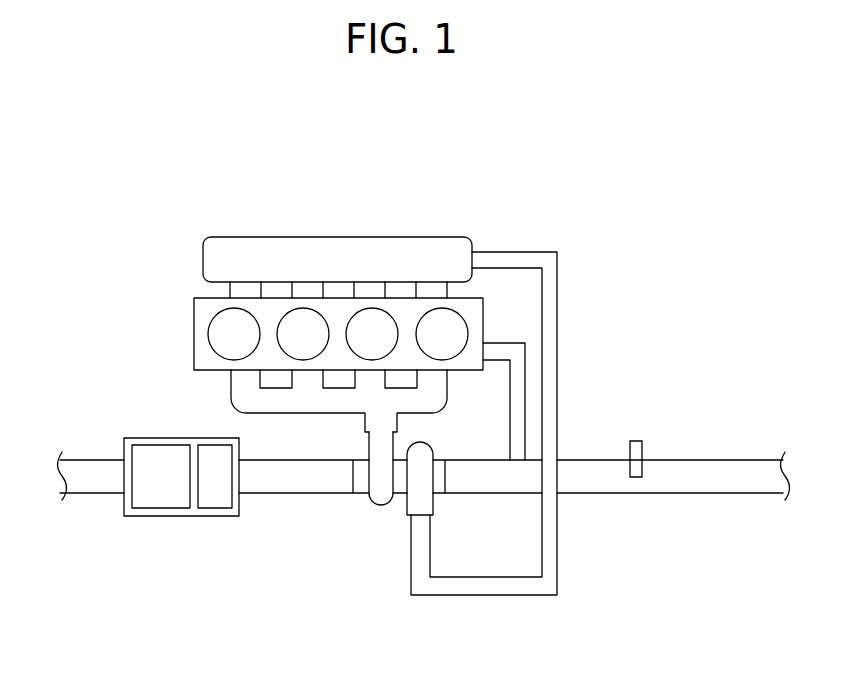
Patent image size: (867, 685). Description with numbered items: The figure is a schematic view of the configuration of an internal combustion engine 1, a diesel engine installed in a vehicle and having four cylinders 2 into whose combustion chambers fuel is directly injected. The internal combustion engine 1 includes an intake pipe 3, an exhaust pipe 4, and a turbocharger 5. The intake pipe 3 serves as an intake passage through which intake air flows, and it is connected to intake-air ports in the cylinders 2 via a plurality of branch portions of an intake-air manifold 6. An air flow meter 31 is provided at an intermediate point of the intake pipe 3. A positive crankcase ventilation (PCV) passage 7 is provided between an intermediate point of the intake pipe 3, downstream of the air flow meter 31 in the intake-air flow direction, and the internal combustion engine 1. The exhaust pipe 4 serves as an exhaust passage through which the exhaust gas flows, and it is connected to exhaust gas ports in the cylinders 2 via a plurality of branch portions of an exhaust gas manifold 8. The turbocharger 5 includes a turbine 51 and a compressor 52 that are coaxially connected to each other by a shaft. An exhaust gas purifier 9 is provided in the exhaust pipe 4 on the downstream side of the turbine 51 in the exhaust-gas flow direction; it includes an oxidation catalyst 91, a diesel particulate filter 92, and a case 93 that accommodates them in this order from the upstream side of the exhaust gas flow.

The internal combustion engine 1 is at (194, 301).
The cylinders 2 is at (221, 356).
The intake pipe 3 is at (557, 319).
The air flow meter 31 is at (642, 450).
The exhaust pipe 4 is at (285, 493).
The turbocharger 5 is at (428, 483).
The turbine 51 is at (378, 505).
The compressor 52 is at (433, 502).
The intake-air manifold 6 is at (203, 257).
The positive crankcase ventilation (PCV) passage 7 is at (517, 384).
The exhaust gas manifold 8 is at (273, 413).
The exhaust gas purifier 9 is at (167, 495).
The oxidation catalyst 91 is at (215, 504).
The diesel particulate filter (DPF) 92 is at (144, 504).
The case 93 is at (148, 438).